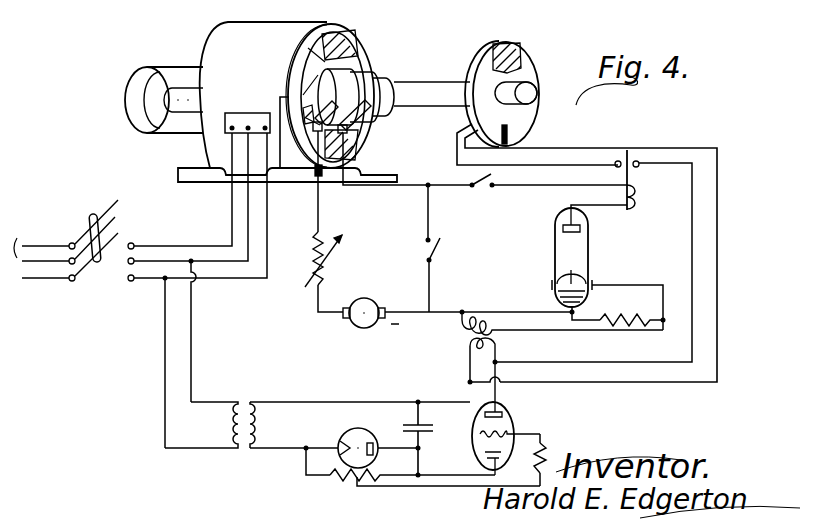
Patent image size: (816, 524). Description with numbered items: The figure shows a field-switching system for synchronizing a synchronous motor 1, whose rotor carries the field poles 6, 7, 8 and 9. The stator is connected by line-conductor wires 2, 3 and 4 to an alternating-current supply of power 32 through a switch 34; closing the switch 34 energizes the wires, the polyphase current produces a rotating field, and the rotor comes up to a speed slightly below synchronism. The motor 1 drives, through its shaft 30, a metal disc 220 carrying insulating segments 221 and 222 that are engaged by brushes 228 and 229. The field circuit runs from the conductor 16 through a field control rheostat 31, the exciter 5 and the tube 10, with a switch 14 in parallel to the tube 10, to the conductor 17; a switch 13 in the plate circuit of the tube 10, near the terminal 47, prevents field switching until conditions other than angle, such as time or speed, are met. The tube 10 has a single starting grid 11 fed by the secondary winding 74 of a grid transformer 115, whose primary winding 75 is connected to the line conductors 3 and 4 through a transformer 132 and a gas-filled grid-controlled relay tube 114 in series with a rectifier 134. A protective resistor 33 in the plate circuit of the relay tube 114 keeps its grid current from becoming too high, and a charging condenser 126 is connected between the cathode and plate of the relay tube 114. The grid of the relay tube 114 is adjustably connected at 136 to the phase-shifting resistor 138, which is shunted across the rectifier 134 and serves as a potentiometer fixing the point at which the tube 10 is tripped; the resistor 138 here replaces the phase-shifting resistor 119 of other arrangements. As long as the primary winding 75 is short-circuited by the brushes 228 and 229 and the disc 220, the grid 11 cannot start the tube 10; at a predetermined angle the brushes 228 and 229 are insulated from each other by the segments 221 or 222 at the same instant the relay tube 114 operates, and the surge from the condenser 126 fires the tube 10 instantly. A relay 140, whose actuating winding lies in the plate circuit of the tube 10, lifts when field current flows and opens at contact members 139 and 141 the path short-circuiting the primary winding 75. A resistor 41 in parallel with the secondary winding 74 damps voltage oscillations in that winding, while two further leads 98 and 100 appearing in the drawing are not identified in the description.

The synchronous motor 1 is at (247, 36).
The line-conductor wire 2 is at (150, 245).
The line-conductor wire 3 is at (165, 258).
The line-conductor wire 4 is at (220, 279).
The exciter 5 is at (363, 300).
The field pole 6 is at (353, 57).
The field pole 7 is at (360, 130).
The field pole 8 is at (313, 118).
The field pole 9 is at (318, 60).
The tube 10 is at (590, 251).
The grid 11 is at (593, 284).
The switch 13 is at (478, 190).
The switch 14 is at (421, 247).
The conductor 16 is at (317, 200).
The conductor 17 is at (362, 190).
The shaft 30 is at (431, 88).
The field control rheostat 31 is at (333, 268).
The alternating-current supply of power 32 is at (41, 242).
The protective resistor 33 is at (548, 451).
The switch 34 is at (89, 213).
The resistor 41 is at (620, 311).
The terminal 47 is at (431, 188).
The secondary winding 74 is at (471, 320).
The primary winding 75 is at (497, 344).
The conductor 98 is at (301, 400).
The conductor 100 is at (279, 449).
The gas-filled grid-controlled relay tube 114 is at (515, 424).
The transformer 115 is at (476, 338).
The phase-shifting resistor 119 is at (622, 8).
The charging condenser 126 is at (425, 430).
The transformer 132 is at (246, 402).
The rectifier 134 is at (352, 437).
The adjustable connection 136 is at (356, 482).
The phase-shifting resistor 138 is at (320, 480).
The contact member 139 is at (615, 167).
The relay 140 is at (630, 160).
The contact member 141 is at (639, 167).
The metal disc 220 is at (523, 70).
The insulating segment 221 is at (508, 44).
The insulating segment 222 is at (537, 94).
The brush 228 is at (457, 126).
The brush 229 is at (512, 139).